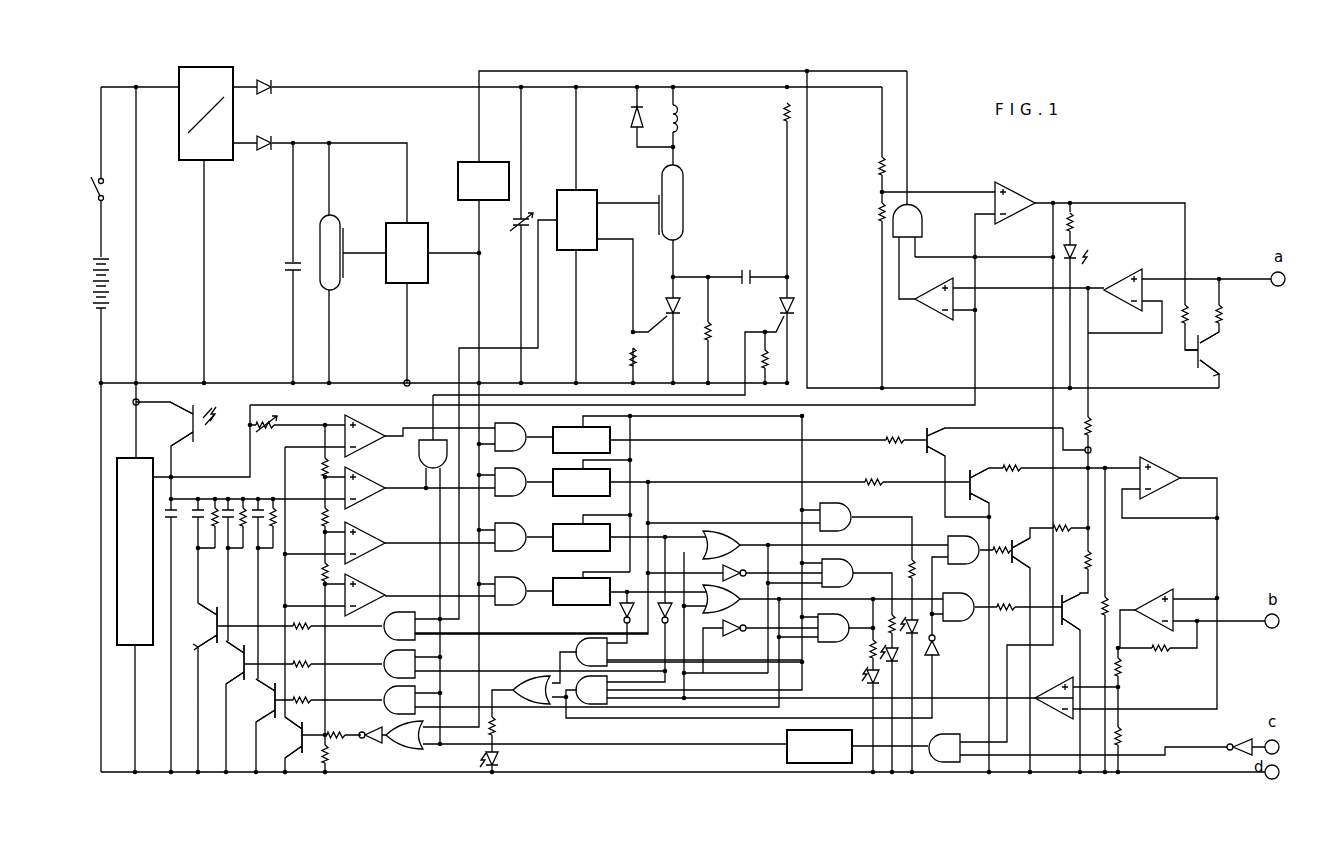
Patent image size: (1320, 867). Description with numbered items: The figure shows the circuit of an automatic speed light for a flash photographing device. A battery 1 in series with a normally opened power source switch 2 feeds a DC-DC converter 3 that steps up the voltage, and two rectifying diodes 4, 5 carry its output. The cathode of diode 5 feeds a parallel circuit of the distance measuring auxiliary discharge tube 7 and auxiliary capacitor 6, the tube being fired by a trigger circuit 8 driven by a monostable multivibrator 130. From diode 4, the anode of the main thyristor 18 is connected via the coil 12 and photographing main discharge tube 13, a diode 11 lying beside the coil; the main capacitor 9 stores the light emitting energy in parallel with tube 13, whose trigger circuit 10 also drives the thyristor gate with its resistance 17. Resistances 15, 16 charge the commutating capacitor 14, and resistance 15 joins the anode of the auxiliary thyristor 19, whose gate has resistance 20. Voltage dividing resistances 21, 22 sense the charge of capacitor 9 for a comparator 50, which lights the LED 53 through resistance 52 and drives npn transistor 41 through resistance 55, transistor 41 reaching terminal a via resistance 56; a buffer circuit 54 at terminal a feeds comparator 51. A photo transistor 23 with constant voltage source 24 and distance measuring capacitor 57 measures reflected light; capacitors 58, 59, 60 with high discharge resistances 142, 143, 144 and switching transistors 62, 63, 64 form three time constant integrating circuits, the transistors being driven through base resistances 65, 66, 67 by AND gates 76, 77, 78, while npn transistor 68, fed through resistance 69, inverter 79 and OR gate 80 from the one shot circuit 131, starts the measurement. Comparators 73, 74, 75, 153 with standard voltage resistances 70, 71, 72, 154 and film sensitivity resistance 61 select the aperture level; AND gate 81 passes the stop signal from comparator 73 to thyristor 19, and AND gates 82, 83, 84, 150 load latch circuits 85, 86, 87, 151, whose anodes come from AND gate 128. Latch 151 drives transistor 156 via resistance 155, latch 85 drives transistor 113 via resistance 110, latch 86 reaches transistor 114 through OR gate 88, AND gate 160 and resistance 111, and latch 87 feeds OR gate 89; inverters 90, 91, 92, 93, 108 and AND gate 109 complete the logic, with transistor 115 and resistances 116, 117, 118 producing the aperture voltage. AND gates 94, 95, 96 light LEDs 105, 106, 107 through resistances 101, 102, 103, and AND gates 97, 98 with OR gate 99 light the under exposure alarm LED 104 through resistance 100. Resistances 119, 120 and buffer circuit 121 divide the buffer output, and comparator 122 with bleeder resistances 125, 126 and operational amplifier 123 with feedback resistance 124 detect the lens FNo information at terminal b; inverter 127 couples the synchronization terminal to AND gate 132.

The battery 1 is at (90, 292).
The power source switch 2 is at (96, 196).
The DC-DC converter 3 is at (180, 70).
The rectifying diode 4 is at (266, 80).
The rectifying diode 5 is at (265, 136).
The auxiliary capacitor 6 is at (285, 265).
The distance measuring auxiliary discharge tube 7 is at (336, 217).
The trigger circuit 8 is at (420, 222).
The main capacitor 9 is at (514, 232).
The trigger circuit 10 is at (584, 189).
The diode 11 is at (630, 116).
The coil 12 is at (681, 115).
The photographing main discharge tube 13 is at (685, 200).
The commutating capacitor 14 is at (750, 266).
The resistance 15 is at (777, 112).
The resistance 16 is at (718, 333).
The resistance 17 is at (623, 357).
The main thyristor 18 is at (680, 306).
The auxiliary thyristor 19 is at (779, 309).
The resistance 20 is at (758, 362).
The voltage dividing resistance 21 is at (879, 164).
The voltage dividing resistance 22 is at (878, 210).
The photo transistor 23 is at (190, 424).
The constant voltage source 24 is at (125, 457).
The npn transistor 41 is at (1205, 354).
The comparator 50 is at (1014, 186).
The comparator 51 is at (936, 314).
The resistance 52 is at (1075, 220).
The light emitting diode 53 is at (1078, 246).
The buffer circuit 54 is at (1122, 280).
The resistance 55 is at (1196, 313).
The resistance 56 is at (1230, 313).
The distance measuring capacitor 57 is at (168, 520).
The capacitor 58 is at (195, 522).
The second capacitor 59 is at (226, 522).
The third capacitor 60 is at (256, 522).
The resistance 61 is at (260, 432).
The switching transistor 62 is at (202, 626).
The switching transistor 63 is at (232, 662).
The switching transistor 64 is at (262, 700).
The base resistance 65 is at (302, 636).
The base resistance 66 is at (302, 673).
The base resistance 67 is at (304, 710).
The npn transistor 68 is at (289, 737).
The resistance 69 is at (336, 723).
The standard voltage supplying resistance 70 is at (335, 753).
The standard voltage supplying resistance 71 is at (315, 571).
The standard voltage supplying resistance 72 is at (315, 516).
The comparator 73 is at (371, 484).
The comparator 74 is at (374, 538).
The comparator 75 is at (374, 590).
The AND gate 76 is at (383, 634).
The AND gate 77 is at (383, 672).
The AND gate 78 is at (383, 708).
The inverter 79 is at (375, 743).
The OR gate 80 is at (414, 748).
The AND gate 81 is at (418, 450).
The AND gate 82 is at (528, 474).
The AND gate 83 is at (528, 526).
The AND gate 84 is at (528, 580).
The latch circuit 85 is at (591, 492).
The latch circuit 86 is at (591, 547).
The latch circuit 87 is at (591, 601).
The OR gate 88 is at (722, 531).
The OR gate 89 is at (738, 592).
The inverter 90 is at (737, 565).
The inverter 91 is at (735, 632).
The inverter 92 is at (662, 626).
The inverter 93 is at (622, 620).
The AND gate 94 is at (852, 504).
The AND gate 95 is at (852, 562).
The AND gate 96 is at (834, 642).
The AND gate 97 is at (604, 661).
The AND gate 98 is at (604, 699).
The OR gate 99 is at (533, 678).
The current limit resistance 100 is at (497, 726).
The resistance 101 is at (870, 652).
The resistance 102 is at (887, 622).
The resistance 103 is at (908, 560).
The under exposure alarm LED 104 is at (499, 761).
The LED 105 is at (864, 680).
The LED 106 is at (900, 664).
The LED 107 is at (908, 618).
The inverter 108 is at (940, 650).
The AND gate 109 is at (960, 594).
The base resistance 110 is at (876, 471).
The base resistance 111 is at (1004, 539).
The npn transistor 113 is at (989, 485).
The npn transistor 114 is at (1029, 553).
The npn transistor 115 is at (1048, 612).
The resistance 116 is at (1014, 457).
The resistance 117 is at (1066, 518).
The resistance 118 is at (1074, 559).
The resistance 119 is at (1104, 426).
The resistance 120 is at (1110, 604).
The buffer circuit 121 is at (1164, 476).
The comparator 122 is at (1050, 712).
The operational amplifier 123 is at (1160, 590).
The resistance 124 is at (1164, 658).
The bleeder resistance 125 is at (1134, 666).
The bleeder resistance 126 is at (1134, 735).
The inverter 127 is at (1236, 738).
The AND gate 128 is at (923, 224).
The monostable multivibrator 130 is at (466, 161).
The one shot circuit 131 is at (786, 757).
The AND gate 132 is at (945, 734).
The high discharge resistance 142 is at (212, 510).
The high discharge resistance 143 is at (242, 510).
The high discharge resistance 144 is at (272, 527).
The AND gate 150 is at (527, 440).
The latch circuit 151 is at (596, 449).
The comparator 153 is at (372, 432).
The standard voltage supplying resistance 154 is at (311, 467).
The resistance 155 is at (898, 426).
The transistor 156 is at (948, 442).
The AND gate 160 is at (944, 545).